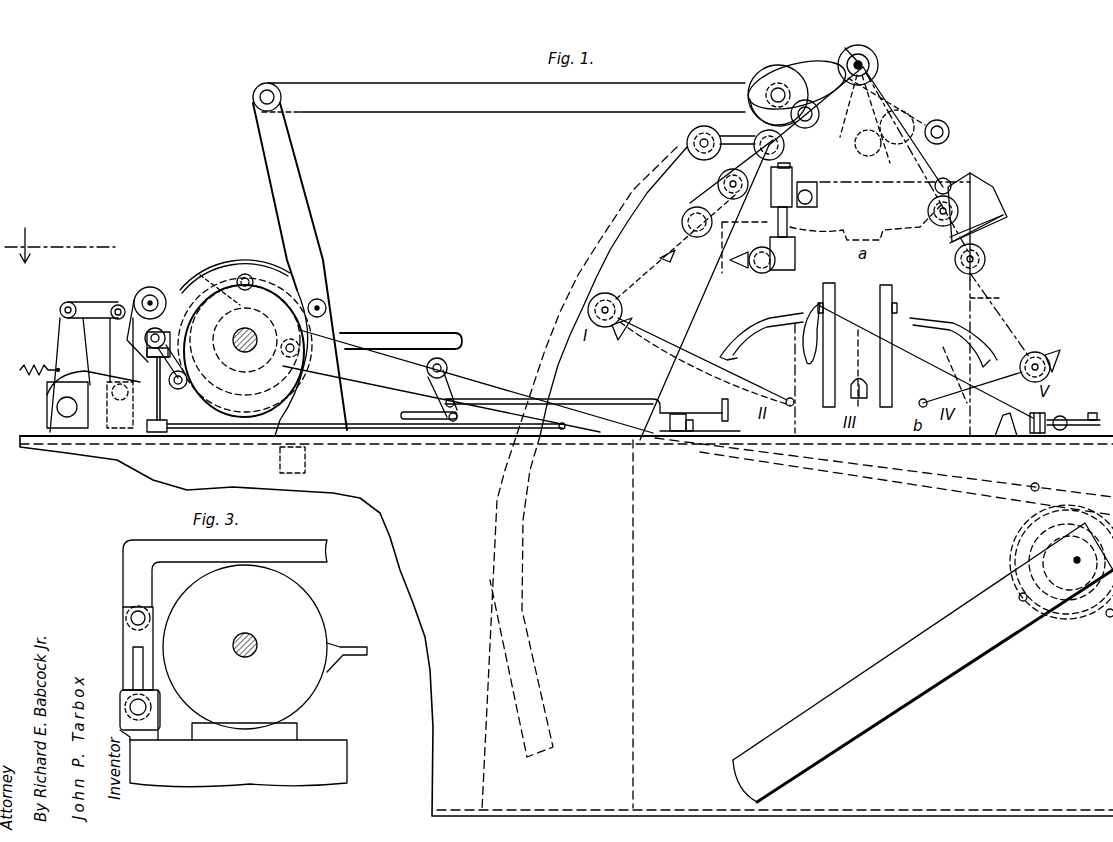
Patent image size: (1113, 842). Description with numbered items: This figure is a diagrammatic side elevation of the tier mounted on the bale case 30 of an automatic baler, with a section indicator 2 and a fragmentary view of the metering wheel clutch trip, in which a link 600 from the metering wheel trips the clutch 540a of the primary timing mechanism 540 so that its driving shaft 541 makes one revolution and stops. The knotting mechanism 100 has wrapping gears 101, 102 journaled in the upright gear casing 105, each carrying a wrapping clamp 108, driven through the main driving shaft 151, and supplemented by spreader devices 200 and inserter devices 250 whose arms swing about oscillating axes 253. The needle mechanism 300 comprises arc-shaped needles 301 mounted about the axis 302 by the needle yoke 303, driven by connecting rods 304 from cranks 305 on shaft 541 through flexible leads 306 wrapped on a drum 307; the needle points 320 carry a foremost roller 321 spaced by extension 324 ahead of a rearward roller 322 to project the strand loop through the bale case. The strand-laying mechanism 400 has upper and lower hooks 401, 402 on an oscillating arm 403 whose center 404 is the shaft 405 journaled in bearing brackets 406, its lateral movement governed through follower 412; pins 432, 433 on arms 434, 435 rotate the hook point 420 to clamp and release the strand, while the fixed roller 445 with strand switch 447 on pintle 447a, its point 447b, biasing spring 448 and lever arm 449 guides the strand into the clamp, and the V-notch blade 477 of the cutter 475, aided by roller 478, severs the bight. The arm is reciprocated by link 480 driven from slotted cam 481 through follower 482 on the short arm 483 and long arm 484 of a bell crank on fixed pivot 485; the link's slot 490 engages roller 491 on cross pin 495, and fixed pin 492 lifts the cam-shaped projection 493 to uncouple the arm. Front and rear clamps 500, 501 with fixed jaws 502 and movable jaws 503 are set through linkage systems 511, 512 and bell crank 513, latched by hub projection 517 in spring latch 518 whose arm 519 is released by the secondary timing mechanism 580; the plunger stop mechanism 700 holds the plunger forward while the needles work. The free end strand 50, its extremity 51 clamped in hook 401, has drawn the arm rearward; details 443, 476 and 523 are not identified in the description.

In FIG. 1, the section line 2 is at (60, 241).
In FIG. 1, the bale case 30 is at (732, 522).
In FIG. 3, the bale case 30 is at (333, 740).
In FIG. 1, the free end strand 50 is at (905, 362).
In FIG. 1, the extremity of free end strand 51 is at (800, 347).
In FIG. 1, the knotting mechanism 100 is at (872, 302).
In FIG. 1, the wrapping gear 101 is at (828, 410).
In FIG. 1, the wrapping gear 102 is at (886, 410).
In FIG. 1, the gear casing 105 is at (1005, 294).
In FIG. 1, the wrapping clamp 108 is at (821, 303).
In FIG. 1, the main driving shaft 151 is at (446, 332).
In FIG. 1, the spreader devices 200 is at (875, 377).
In FIG. 1, the inserter devices 250 is at (748, 322).
In FIG. 1, the oscillating axes 253 is at (790, 398).
In FIG. 1, the needle mechanism 300 is at (528, 590).
In FIG. 1, the needles 301 is at (590, 244).
In FIG. 1, the needle axis 302 is at (1077, 562).
In FIG. 1, the needle yoke 303 is at (885, 660).
In FIG. 1, the connecting rods 304 is at (950, 490).
In FIG. 1, the cranks 305 is at (345, 412).
In FIG. 1, the flexible leads 306 is at (1012, 535).
In FIG. 1, the drum 307 is at (1005, 562).
In FIG. 1, the needle points 320 is at (687, 146).
In FIG. 1, the foremost roller 321 is at (785, 151).
In FIG. 1, the rearward roller 322 is at (688, 132).
In FIG. 1, the extension 324 is at (734, 129).
In FIG. 1, the strand-laying mechanism 400 is at (834, 161).
In FIG. 1, the upper hook 401 is at (718, 187).
In FIG. 1, the lower hook 402 is at (624, 315).
In FIG. 1, the oscillating arm 403 is at (690, 236).
In FIG. 1, the center of oscillation 404 is at (866, 60).
In FIG. 1, the supporting shaft 405 is at (872, 65).
In FIG. 1, the bearing brackets 406 is at (845, 50).
In FIG. 1, the cam follower 412 is at (820, 115).
In FIG. 1, the hook point 420 is at (740, 177).
In FIG. 1, the forward pin 432 is at (948, 180).
In FIG. 1, the rearward pin 433 is at (818, 200).
In FIG. 1, the arm 434 is at (990, 184).
In FIG. 1, the arm 435 is at (630, 331).
In FIG. 1, the pulley 443 is at (1000, 428).
In FIG. 1, the lay feed roller 445 is at (770, 272).
In FIG. 1, the strand switch 447 is at (737, 270).
In FIG. 1, the pintle 447a is at (790, 218).
In FIG. 1, the switch point 447b is at (688, 253).
In FIG. 1, the spring 448 is at (796, 244).
In FIG. 1, the lever arm 449 is at (793, 171).
In FIG. 1, the strand cutter 475 is at (1005, 220).
In FIG. 1, the plate edge 476 is at (998, 201).
In FIG. 1, the V-notch cutting blade 477 is at (993, 238).
In FIG. 1, the strand engaging roller 478 is at (688, 212).
In FIG. 1, the link 480 is at (488, 79).
In FIG. 1, the slotted cam 481 is at (347, 390).
In FIG. 1, the follower 482 is at (205, 268).
In FIG. 1, the short arm of bell crank 483 is at (262, 272).
In FIG. 1, the long arm of bell crank 484 is at (308, 196).
In FIG. 1, the fixed pivot 485 is at (326, 304).
In FIG. 1, the slot 490 is at (758, 73).
In FIG. 1, the roller 491 is at (774, 80).
In FIG. 1, the fixed pin 492 is at (950, 130).
In FIG. 1, the cam-shaped frontal projection 493 is at (950, 87).
In FIG. 1, the cross pin 495 is at (770, 88).
In FIG. 1, the front bale case clamps 500 is at (1077, 467).
In FIG. 1, the rear bale case clamps 501 is at (702, 402).
In FIG. 1, the fixed jaws 502 is at (640, 440).
In FIG. 1, the movable jaws 503 is at (680, 433).
In FIG. 1, the linkage system 511 is at (405, 431).
In FIG. 1, the linkage system 512 is at (447, 362).
In FIG. 1, the bell crank 513 is at (170, 418).
In FIG. 1, the crank hub projection 517 is at (147, 363).
In FIG. 1, the spring latch 518 is at (133, 300).
In FIG. 1, the latch arm 519 is at (165, 300).
In FIG. 1, the belt 523 is at (622, 310).
In FIG. 1, the primary timing mechanism 540 is at (228, 262).
In FIG. 1, the clutch 540a is at (292, 270).
In FIG. 3, the clutch 540a is at (322, 612).
In FIG. 1, the driving shaft 541 is at (233, 340).
In FIG. 3, the driving shaft 541 is at (258, 642).
In FIG. 1, the secondary timing mechanism 580 is at (302, 292).
In FIG. 3, the metering mechanism 600 is at (342, 531).
In FIG. 1, the plunger stop mechanism 700 is at (34, 415).